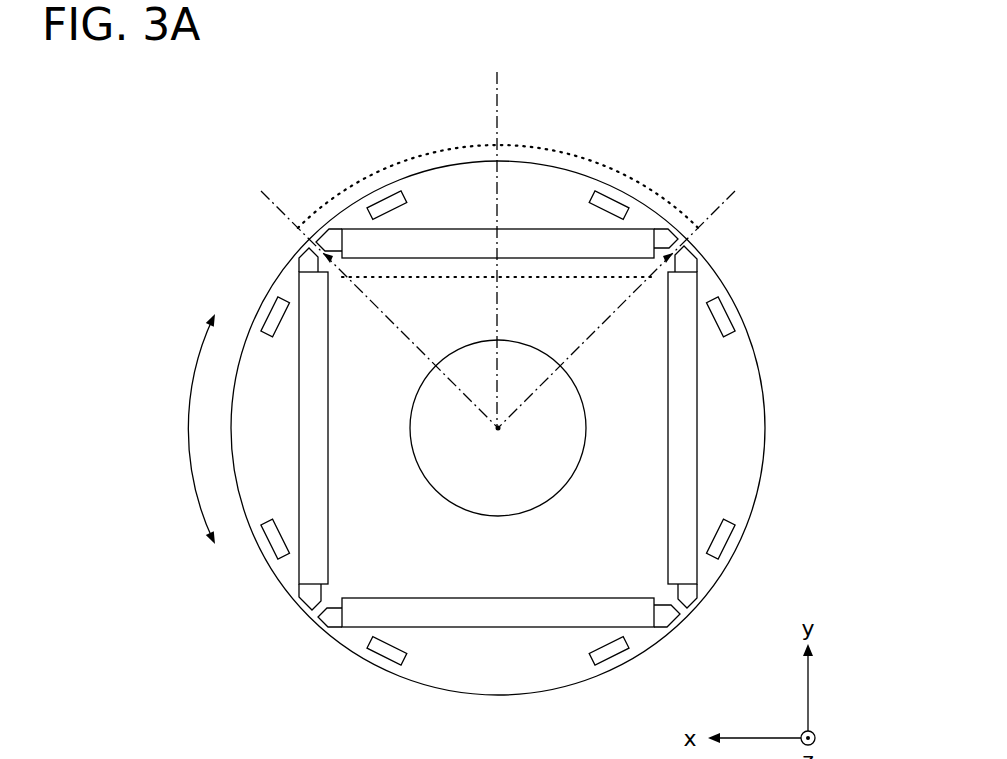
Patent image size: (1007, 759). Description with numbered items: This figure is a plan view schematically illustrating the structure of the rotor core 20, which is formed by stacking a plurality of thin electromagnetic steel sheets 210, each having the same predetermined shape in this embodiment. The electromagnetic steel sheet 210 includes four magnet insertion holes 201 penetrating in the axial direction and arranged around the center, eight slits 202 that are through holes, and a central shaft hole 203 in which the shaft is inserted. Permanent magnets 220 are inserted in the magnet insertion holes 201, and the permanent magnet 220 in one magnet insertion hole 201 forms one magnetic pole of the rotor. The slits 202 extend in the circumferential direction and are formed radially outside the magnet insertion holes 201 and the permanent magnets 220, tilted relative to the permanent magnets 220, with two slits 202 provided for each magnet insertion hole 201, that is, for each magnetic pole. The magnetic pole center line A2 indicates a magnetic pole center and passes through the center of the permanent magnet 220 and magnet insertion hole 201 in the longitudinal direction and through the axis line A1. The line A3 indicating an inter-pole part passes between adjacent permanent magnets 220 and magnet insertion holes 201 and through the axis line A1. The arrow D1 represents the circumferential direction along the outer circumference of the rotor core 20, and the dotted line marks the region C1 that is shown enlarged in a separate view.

The rotor core 20 is at (214, 146).
The magnet insertion hole 201 is at (498, 426).
The slit 202 is at (390, 195).
The shaft hole 203 is at (494, 516).
The electromagnetic steel sheet 210 is at (766, 414).
The permanent magnet 220 is at (462, 244).
The axis line A1 is at (496, 430).
The magnetic pole center line A2 is at (499, 84).
The line indicating an inter-pole part A3 is at (263, 190).
The region C1 is at (440, 146).
The arrow representing the circumferential direction D1 is at (168, 429).